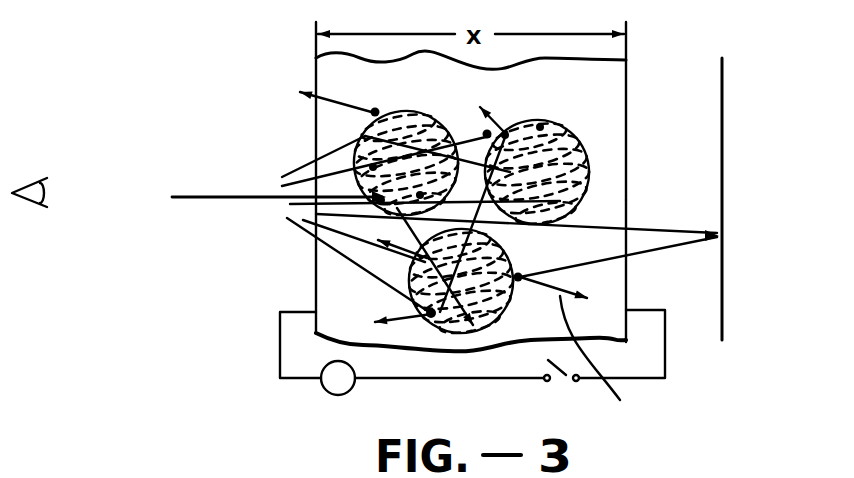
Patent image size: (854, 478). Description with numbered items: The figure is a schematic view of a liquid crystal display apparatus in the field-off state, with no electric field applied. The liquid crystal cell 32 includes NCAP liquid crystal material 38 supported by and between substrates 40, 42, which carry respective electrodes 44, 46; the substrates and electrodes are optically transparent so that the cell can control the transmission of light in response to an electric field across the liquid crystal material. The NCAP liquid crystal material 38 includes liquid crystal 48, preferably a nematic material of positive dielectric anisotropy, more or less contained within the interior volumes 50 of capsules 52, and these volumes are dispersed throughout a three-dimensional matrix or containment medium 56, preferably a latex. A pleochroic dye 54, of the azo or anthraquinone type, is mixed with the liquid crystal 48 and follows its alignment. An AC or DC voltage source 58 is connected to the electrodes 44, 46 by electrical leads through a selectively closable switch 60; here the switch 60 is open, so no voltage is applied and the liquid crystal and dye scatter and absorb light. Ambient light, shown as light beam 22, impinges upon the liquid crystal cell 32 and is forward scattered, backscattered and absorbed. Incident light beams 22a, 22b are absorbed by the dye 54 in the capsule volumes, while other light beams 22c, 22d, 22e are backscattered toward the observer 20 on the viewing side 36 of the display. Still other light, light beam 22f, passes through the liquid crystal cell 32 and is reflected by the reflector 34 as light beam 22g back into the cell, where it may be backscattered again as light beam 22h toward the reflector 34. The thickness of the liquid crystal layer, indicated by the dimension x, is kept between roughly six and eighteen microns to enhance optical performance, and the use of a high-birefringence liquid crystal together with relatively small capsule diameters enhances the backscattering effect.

The observer 20 is at (27, 183).
The light beam 22 is at (197, 195).
The light beam 22a is at (305, 221).
The light beam 22b is at (288, 172).
The light beam 22c is at (340, 151).
The light beam 22d is at (290, 206).
The light beam 22e is at (313, 233).
The light beam 22f is at (675, 228).
The light beam 22g is at (677, 248).
The light beam 22h is at (612, 362).
The liquid crystal cell 32 is at (303, 62).
The reflector 34 is at (723, 316).
The viewing side 36 is at (238, 73).
The NCAP liquid crystal material 38 is at (607, 62).
The substrate 40 is at (633, 292).
The substrate 42 is at (316, 113).
The electrode 44 is at (625, 285).
The electrode 46 is at (328, 292).
The liquid crystal 48 is at (578, 137).
The interior volume 50 is at (548, 117).
The capsule 52 is at (545, 118).
The pleochroic dye 54 is at (588, 160).
The containment medium 56 is at (622, 188).
The voltage source 58 is at (325, 386).
The switch 60 is at (560, 383).